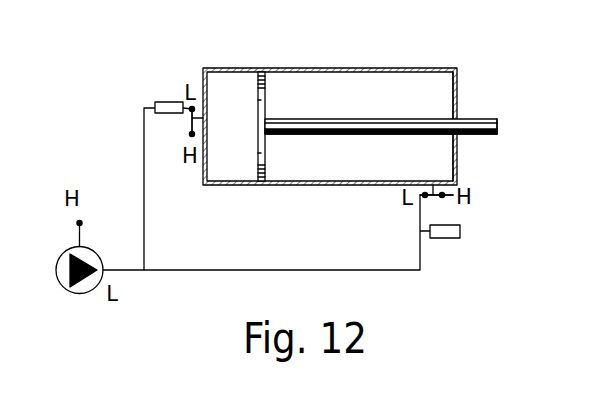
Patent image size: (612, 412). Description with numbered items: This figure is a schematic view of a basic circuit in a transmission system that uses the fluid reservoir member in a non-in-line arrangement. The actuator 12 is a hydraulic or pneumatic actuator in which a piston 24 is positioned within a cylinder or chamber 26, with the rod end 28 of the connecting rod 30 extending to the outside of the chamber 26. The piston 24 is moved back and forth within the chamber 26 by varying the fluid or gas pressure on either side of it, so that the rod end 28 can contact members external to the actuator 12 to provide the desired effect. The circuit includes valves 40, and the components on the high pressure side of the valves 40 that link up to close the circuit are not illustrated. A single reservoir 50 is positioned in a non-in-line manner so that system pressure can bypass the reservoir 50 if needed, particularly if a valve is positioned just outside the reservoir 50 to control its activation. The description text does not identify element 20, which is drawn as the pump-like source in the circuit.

The actuator 12 is at (436, 96).
The pump 20 is at (85, 294).
The piston 24 is at (258, 136).
The chamber 26 is at (448, 153).
The rod end 28 is at (497, 127).
The connecting rod 30 is at (390, 137).
The valve 40 is at (82, 223).
The reservoir 50 is at (167, 100).